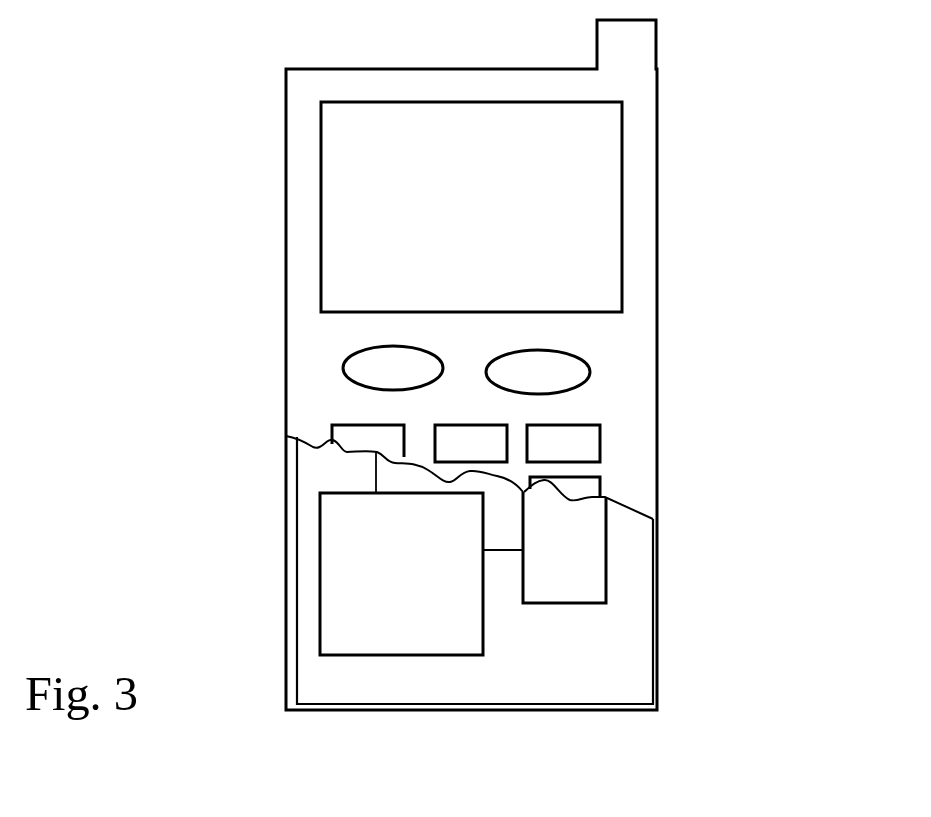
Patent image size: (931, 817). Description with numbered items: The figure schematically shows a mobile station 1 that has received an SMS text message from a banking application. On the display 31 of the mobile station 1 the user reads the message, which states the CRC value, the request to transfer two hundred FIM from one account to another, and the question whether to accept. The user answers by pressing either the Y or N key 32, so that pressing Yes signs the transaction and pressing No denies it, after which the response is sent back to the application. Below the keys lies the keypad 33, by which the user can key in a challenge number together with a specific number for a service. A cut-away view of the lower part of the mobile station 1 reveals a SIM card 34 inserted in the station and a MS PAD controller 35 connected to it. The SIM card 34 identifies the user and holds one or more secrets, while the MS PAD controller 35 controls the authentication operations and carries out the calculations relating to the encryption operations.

The mobile station 1 is at (285, 145).
The display 31 is at (330, 216).
The Y or N key 32 is at (350, 357).
The keypad 33 is at (589, 448).
The SIM card 34 is at (587, 545).
The MS PAD controller 35 is at (340, 570).